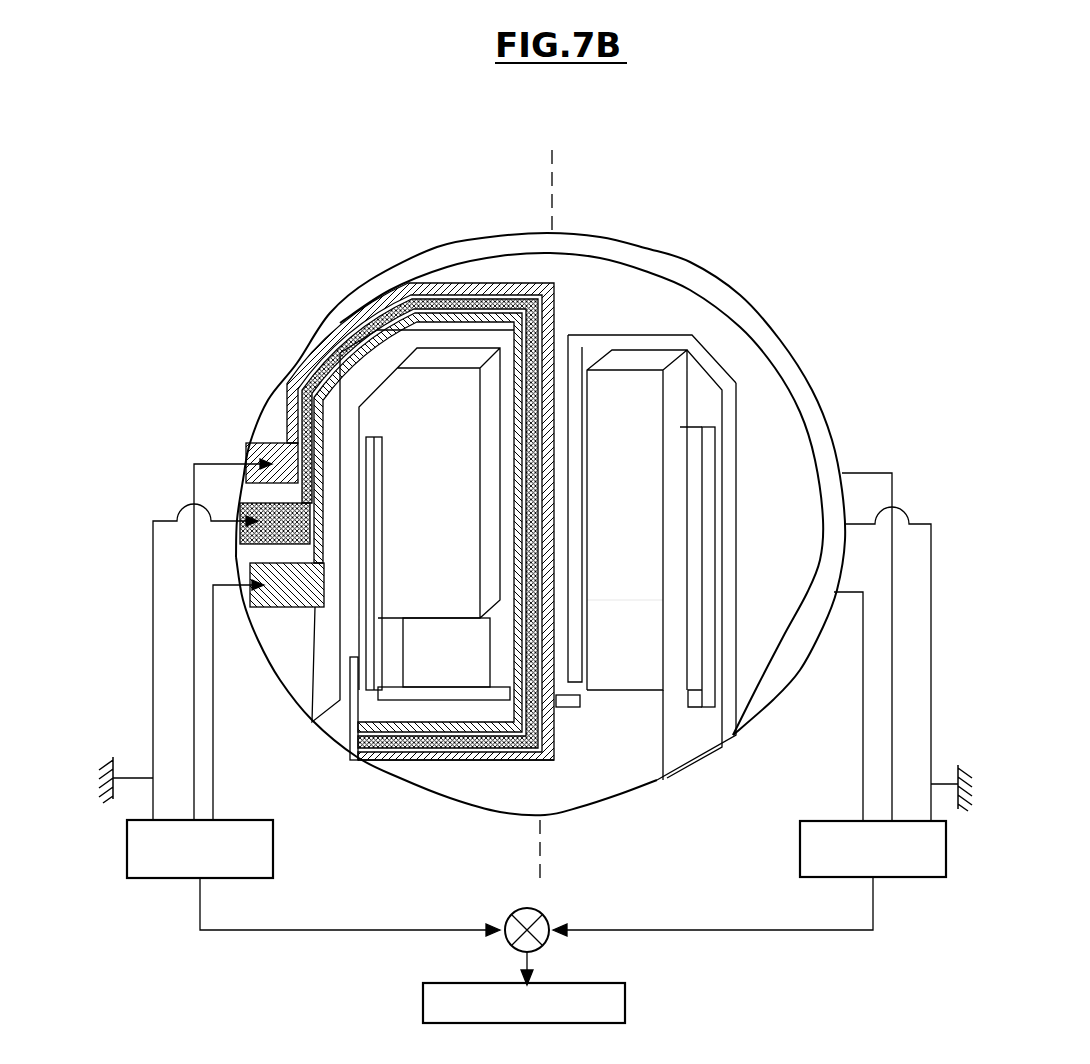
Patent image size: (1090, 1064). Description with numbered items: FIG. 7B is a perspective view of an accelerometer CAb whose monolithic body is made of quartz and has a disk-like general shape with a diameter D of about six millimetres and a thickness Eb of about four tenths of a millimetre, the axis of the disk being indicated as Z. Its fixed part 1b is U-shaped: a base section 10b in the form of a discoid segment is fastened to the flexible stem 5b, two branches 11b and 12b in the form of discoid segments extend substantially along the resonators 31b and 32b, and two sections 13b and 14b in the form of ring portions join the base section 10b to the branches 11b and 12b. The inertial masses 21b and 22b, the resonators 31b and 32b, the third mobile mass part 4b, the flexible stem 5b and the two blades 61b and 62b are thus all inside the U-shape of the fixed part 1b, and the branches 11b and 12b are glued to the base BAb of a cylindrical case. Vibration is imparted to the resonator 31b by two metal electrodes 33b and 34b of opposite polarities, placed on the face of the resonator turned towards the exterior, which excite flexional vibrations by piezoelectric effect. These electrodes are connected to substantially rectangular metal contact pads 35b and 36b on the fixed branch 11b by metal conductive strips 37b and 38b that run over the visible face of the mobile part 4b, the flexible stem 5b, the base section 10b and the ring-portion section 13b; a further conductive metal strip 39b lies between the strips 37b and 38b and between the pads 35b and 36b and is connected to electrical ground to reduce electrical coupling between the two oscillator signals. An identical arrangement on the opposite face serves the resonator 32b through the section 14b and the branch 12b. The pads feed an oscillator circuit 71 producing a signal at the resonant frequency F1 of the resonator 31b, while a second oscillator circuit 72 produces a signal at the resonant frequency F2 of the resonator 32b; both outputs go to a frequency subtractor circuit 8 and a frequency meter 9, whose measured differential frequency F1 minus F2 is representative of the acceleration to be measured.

The fixed part 1b is at (626, 230).
The base section 10b is at (512, 247).
The ring portion section 14b is at (745, 355).
The ring portion section 13b is at (336, 327).
The branch 12b is at (757, 688).
The branch 11b is at (297, 677).
The third mobile mass part 4b is at (605, 790).
The flexible stem 5b is at (560, 448).
The inertial mass 21b is at (412, 397).
The inertial mass 22b is at (637, 530).
The resonator 31b is at (382, 486).
The resonator 32b is at (702, 477).
The blade 61b is at (443, 640).
The blade 62b is at (633, 640).
The metal electrode 33b is at (350, 728).
The metal electrode 34b is at (372, 688).
The metal contact pad 35b is at (245, 479).
The metal contact pad 36b is at (273, 592).
The metal conductive strip 37b is at (500, 760).
The metal conductive strip 38b is at (495, 715).
The conductive metal strip 39b is at (540, 734).
The oscillator circuit 71 is at (273, 843).
The oscillator circuit 72 is at (800, 852).
The frequency subtractor circuit 8 is at (528, 910).
The frequency meter 9 is at (627, 1003).
The resonant frequency F1 is at (200, 918).
The resonant frequency F2 is at (873, 926).
The central axis Z is at (558, 516).
The thickness Eb is at (662, 298).
The diameter D is at (832, 410).
The accelerometer CAb is at (396, 222).
The base of cylindrical case BAb is at (267, 722).